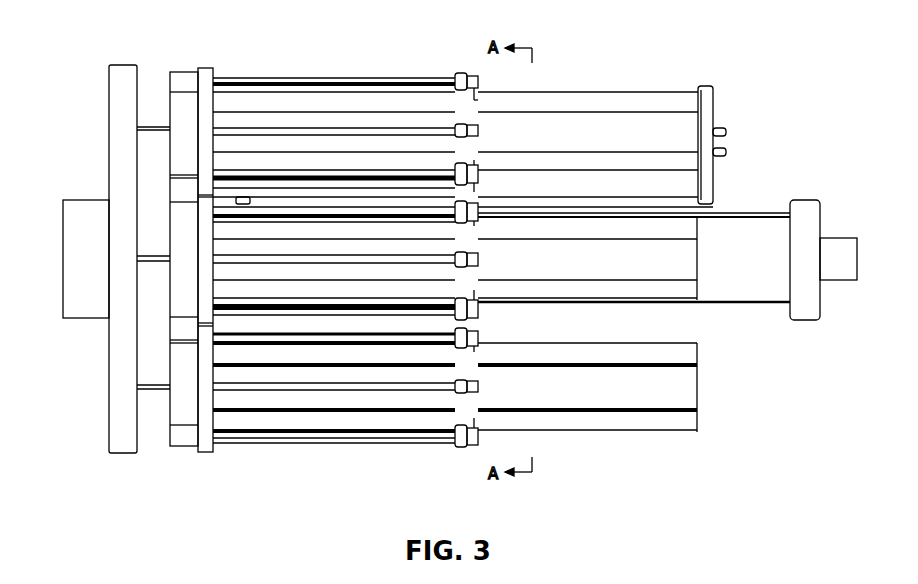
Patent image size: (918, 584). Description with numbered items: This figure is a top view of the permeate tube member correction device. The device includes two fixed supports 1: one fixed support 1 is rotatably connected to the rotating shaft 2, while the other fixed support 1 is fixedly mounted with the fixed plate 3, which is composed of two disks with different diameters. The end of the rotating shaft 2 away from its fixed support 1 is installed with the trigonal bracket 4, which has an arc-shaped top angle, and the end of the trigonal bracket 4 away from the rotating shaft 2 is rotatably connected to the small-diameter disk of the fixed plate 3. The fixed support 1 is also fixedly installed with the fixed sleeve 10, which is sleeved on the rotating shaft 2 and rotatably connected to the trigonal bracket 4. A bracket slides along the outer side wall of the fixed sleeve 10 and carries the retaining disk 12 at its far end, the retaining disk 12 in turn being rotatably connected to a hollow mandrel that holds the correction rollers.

The fixed support 1 is at (85, 258).
The rotating shaft 2 is at (840, 263).
The fixed plate 3 is at (117, 160).
The trigonal bracket 4 is at (187, 120).
The fixed sleeve 10 is at (737, 278).
The retaining disk 12 is at (707, 115).